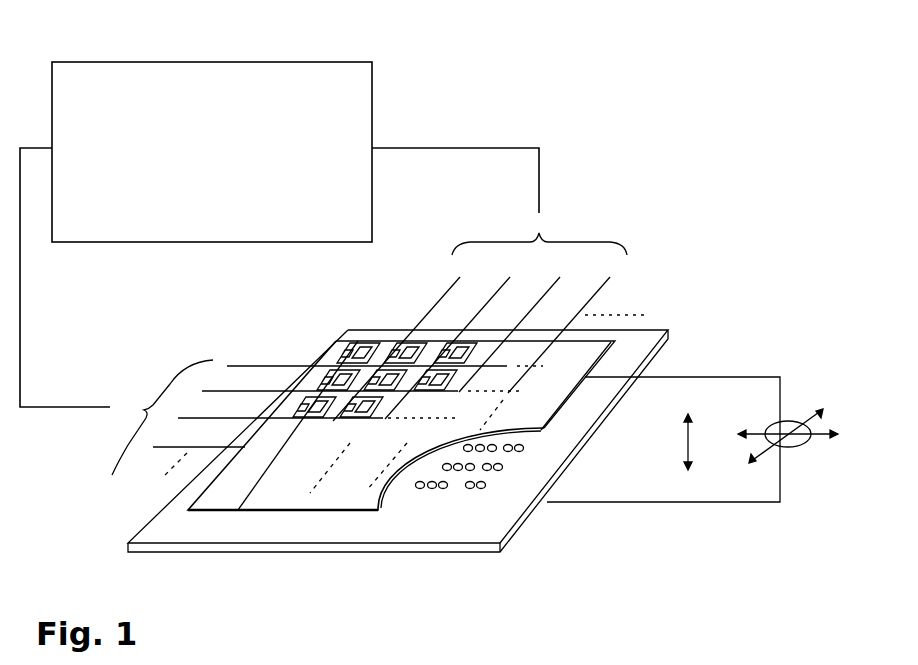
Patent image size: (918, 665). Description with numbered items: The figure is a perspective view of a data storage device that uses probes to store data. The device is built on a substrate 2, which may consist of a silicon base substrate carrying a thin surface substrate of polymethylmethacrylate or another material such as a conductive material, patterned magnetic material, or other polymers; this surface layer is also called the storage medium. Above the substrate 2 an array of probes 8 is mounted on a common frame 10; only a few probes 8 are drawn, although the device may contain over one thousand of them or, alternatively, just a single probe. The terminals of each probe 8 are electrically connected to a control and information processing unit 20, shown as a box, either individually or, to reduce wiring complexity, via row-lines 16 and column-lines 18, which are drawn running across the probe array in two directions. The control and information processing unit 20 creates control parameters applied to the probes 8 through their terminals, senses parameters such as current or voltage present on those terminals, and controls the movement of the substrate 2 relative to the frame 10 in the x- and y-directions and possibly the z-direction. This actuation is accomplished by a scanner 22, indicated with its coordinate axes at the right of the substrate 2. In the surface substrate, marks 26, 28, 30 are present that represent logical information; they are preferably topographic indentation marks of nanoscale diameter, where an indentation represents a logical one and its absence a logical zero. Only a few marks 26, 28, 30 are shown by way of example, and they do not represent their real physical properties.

The substrate 2 is at (216, 553).
The probes 8 is at (400, 347).
The common frame 10 is at (215, 494).
The row-lines 16 is at (268, 391).
The column-lines 18 is at (547, 295).
The control and information processing unit 20 is at (116, 62).
The scanner 22 is at (810, 387).
The mark 26 is at (432, 489).
The mark 28 is at (445, 489).
The mark 30 is at (479, 489).